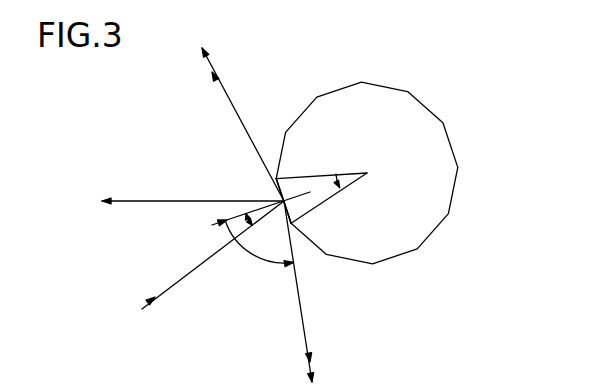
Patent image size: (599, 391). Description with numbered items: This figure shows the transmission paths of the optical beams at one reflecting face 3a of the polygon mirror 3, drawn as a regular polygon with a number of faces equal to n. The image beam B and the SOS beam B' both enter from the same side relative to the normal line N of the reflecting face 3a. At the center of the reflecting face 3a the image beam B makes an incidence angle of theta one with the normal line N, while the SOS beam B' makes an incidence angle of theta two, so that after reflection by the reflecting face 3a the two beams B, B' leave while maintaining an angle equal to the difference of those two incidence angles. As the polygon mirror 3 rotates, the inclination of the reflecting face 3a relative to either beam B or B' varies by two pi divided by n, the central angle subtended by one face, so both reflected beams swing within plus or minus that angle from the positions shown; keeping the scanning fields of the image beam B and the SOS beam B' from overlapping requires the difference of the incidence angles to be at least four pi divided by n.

The polygon mirror 3 is at (442, 155).
The reflecting face 3a is at (276, 176).
The image beam B is at (189, 238).
The SOS beam B' is at (254, 215).
The normal line N is at (223, 218).